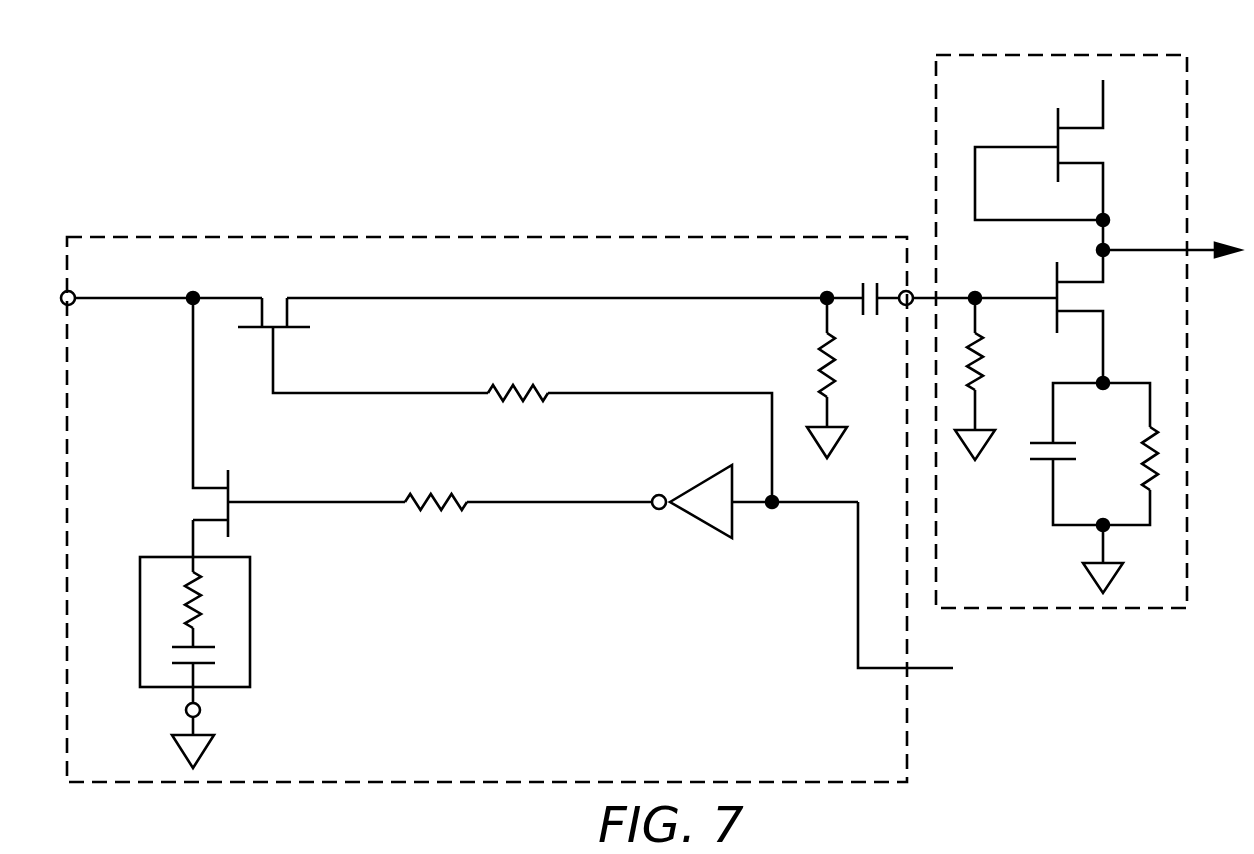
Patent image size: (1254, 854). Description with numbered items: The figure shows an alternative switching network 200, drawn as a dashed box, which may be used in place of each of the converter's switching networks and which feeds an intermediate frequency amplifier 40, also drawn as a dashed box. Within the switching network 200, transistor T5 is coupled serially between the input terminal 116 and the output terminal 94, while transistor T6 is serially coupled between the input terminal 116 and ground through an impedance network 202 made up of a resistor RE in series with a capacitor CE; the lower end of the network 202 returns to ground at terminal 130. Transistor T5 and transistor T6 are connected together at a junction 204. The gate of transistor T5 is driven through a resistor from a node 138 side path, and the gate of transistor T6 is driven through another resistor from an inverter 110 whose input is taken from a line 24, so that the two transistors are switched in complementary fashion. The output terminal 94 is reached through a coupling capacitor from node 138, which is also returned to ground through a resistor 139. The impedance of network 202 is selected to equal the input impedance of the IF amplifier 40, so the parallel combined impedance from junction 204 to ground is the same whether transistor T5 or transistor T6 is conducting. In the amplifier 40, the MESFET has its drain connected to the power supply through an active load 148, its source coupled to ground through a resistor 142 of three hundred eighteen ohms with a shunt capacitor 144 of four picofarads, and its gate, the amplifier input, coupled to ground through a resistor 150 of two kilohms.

The switching network 200 is at (265, 237).
The intermediate frequency amplifier 40 is at (1057, 55).
The input terminal 116 is at (61, 298).
The junction 204 is at (191, 295).
The transistor T5 is at (274, 302).
The transistor T6 is at (210, 505).
The node 138 is at (862, 284).
The output terminal 94 is at (904, 291).
The resistor 139 is at (820, 375).
The resistor 150 is at (982, 370).
The active load 148 is at (1090, 142).
The capacitor 144 is at (1062, 455).
The resistor 142 is at (1146, 445).
The inverter 110 is at (703, 482).
The input line 24 is at (918, 668).
The impedance network 202 is at (250, 640).
The resistor RE is at (185, 624).
The capacitor CE is at (200, 658).
The ground terminal 130 is at (185, 711).